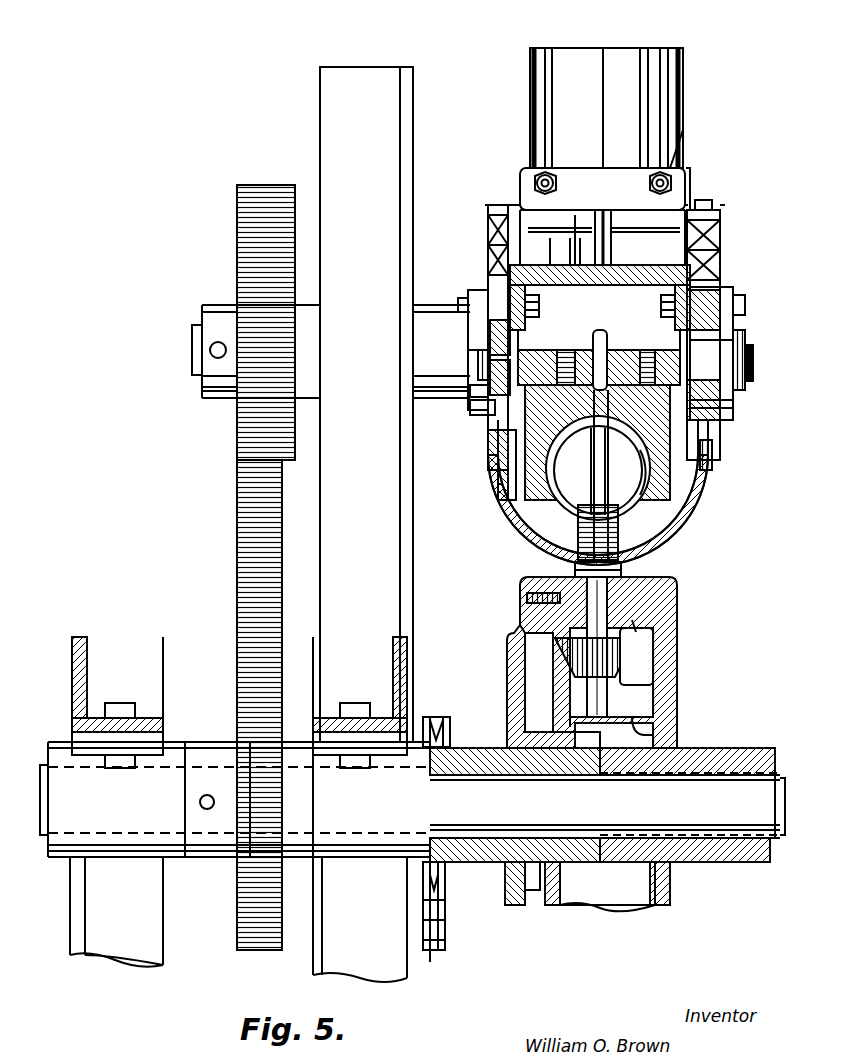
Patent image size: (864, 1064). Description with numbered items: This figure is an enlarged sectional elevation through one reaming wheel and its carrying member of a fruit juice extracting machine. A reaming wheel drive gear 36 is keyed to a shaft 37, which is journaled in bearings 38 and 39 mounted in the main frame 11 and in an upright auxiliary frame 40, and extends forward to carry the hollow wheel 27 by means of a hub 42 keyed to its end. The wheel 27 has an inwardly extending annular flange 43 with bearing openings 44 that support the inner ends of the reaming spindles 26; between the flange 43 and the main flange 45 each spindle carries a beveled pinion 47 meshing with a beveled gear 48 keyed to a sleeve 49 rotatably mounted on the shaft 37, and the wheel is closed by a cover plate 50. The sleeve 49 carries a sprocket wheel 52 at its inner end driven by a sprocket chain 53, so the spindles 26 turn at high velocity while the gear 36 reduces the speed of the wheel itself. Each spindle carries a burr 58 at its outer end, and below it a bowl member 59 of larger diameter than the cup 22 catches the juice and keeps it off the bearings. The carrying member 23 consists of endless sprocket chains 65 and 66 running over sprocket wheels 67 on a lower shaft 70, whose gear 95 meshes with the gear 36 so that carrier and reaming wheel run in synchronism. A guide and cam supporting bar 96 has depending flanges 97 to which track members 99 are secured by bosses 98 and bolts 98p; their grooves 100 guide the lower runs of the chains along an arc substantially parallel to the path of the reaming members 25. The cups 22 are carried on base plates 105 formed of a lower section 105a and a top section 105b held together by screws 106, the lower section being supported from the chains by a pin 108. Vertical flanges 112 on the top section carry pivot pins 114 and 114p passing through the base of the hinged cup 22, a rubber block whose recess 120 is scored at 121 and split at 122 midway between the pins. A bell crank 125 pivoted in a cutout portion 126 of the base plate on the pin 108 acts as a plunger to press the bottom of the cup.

The main frame 11 is at (427, 964).
The carrying cup 22 is at (700, 76).
The carrying member 23 is at (735, 238).
The reaming member 25 is at (552, 524).
The reaming spindle 26 is at (622, 570).
The reaming wheel 27 is at (653, 645).
The reaming wheel drive gear 36 is at (244, 652).
The reaming wheel drive shaft 37 is at (722, 838).
The bearing 38 is at (358, 852).
The bearing 39 is at (145, 852).
The upright auxiliary frame 40 is at (145, 965).
The hub 42 is at (745, 748).
The annular flange 43 is at (653, 728).
The bearing opening 44 is at (610, 690).
The main flange 45 is at (672, 620).
The beveled pinion 47 is at (635, 665).
The beveled gear 48 is at (553, 675).
The sleeve 49 is at (484, 748).
The cover plate 50 is at (520, 612).
The sprocket wheel 52 is at (440, 717).
The sprocket chain 53 is at (445, 922).
The burr 58 is at (620, 480).
The bowl member 59 is at (645, 498).
The endless sprocket chain 65 is at (488, 212).
The endless sprocket chain 66 is at (712, 210).
The sprocket wheel 67 is at (505, 205).
The lower shaft 70 is at (745, 350).
The gear 95 is at (237, 245).
The guide and cam supporting bar 96 is at (630, 288).
The depending flange 97 is at (538, 322).
The boss 98 is at (478, 300).
The bolt 98p is at (460, 300).
The track member 99 is at (477, 426).
The groove 100 is at (470, 395).
The base plate 105 is at (684, 168).
The lower base plate section 105a is at (565, 232).
The top base plate section 105b is at (498, 440).
The screw 106 is at (596, 345).
The pin 108 is at (690, 190).
The vertical flange 112 is at (610, 168).
The pivot pin 114 is at (556, 182).
The pivot pin 114p is at (712, 442).
The cup recess 120 is at (620, 530).
The scoring 121 is at (510, 470).
The split 122 is at (608, 80).
The bell crank 125 is at (611, 250).
The cutout portion 126 is at (585, 232).